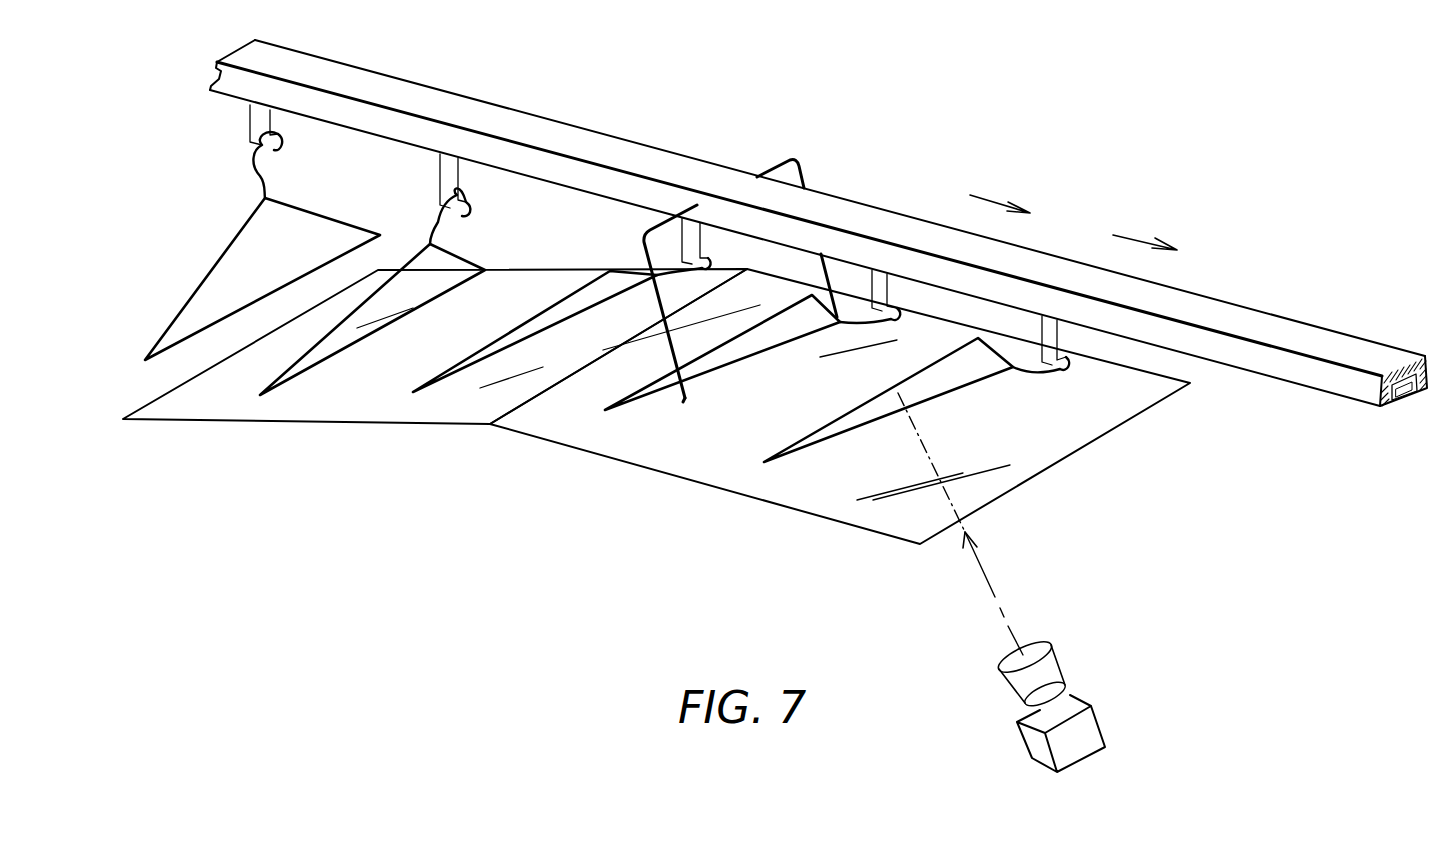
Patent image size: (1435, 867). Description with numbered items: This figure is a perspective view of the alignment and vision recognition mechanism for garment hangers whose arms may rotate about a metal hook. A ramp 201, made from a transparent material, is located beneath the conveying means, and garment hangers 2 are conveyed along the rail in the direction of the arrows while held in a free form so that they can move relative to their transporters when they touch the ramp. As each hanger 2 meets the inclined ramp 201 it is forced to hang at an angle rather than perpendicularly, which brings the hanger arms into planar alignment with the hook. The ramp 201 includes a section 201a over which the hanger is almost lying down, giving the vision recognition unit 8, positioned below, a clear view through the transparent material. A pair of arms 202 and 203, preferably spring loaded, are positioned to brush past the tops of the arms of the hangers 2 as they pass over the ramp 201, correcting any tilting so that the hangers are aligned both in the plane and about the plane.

The garment hanger 2 is at (407, 395).
The vision recognition unit 8 is at (1088, 722).
The ramp 201 is at (323, 420).
The section 201a is at (782, 512).
The arm 202 is at (668, 350).
The arm 203 is at (807, 166).